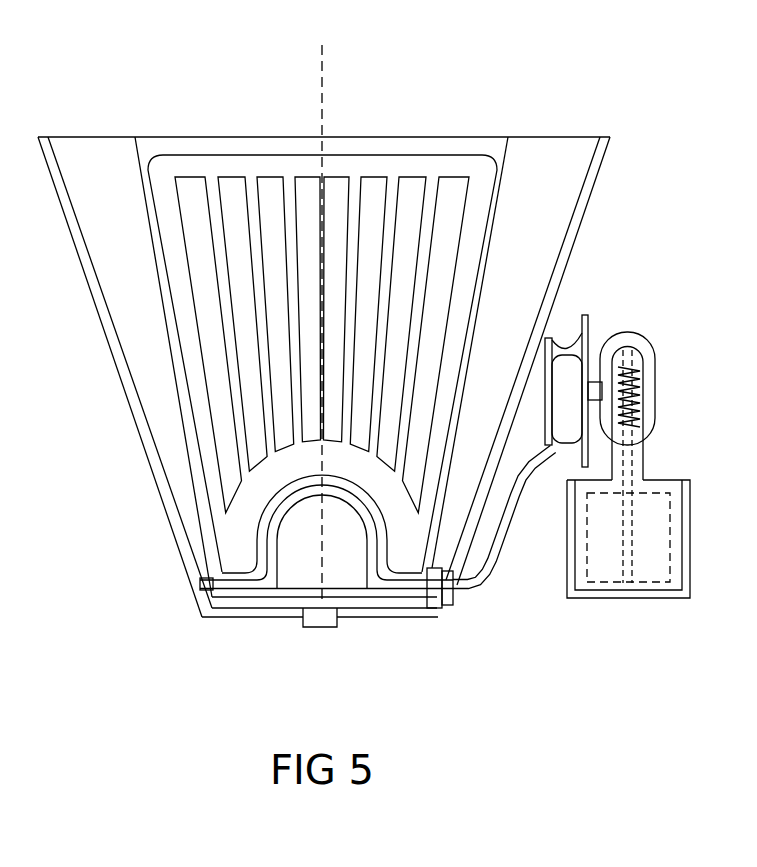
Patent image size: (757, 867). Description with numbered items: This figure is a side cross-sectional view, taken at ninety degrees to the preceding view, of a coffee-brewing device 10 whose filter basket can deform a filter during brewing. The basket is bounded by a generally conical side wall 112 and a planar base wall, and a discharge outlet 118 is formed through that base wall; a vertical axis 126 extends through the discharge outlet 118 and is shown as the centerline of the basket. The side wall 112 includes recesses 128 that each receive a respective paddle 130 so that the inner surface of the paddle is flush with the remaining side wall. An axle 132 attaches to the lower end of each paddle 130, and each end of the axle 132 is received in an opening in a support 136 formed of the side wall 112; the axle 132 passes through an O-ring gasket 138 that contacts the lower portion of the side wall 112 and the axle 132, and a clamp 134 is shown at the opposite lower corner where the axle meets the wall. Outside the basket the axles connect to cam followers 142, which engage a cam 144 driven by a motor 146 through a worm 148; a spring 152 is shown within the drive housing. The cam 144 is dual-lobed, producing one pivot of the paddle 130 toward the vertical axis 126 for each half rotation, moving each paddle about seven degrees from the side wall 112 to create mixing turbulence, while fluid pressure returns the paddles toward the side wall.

The heater assembly 10 is at (96, 441).
The side wall 112 is at (154, 488).
The discharge outlet 118 is at (322, 630).
The vertical axis 126 is at (325, 70).
The recesses 128 is at (149, 143).
The paddles 130 is at (353, 172).
The axle 132 is at (367, 582).
The clamp bracket 134 is at (200, 583).
The support 136 is at (437, 598).
The O-ring gasket 138 is at (452, 607).
The cam followers 142 is at (568, 372).
The cam 144 is at (587, 320).
The motor 146 is at (641, 565).
The worm 148 is at (653, 397).
The spring 152 is at (653, 423).